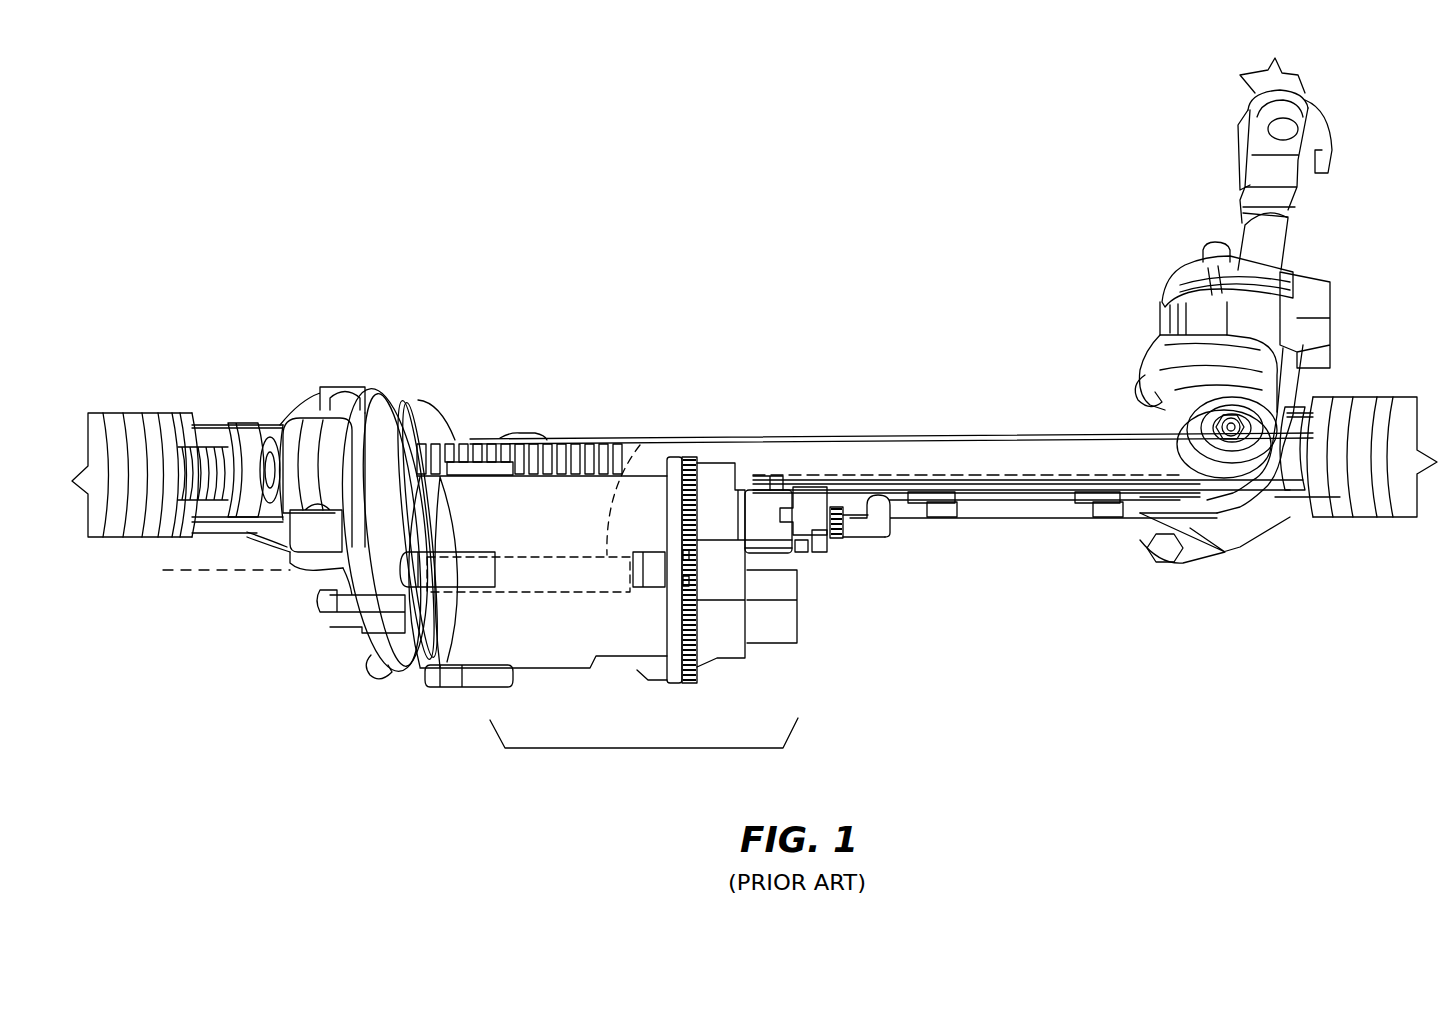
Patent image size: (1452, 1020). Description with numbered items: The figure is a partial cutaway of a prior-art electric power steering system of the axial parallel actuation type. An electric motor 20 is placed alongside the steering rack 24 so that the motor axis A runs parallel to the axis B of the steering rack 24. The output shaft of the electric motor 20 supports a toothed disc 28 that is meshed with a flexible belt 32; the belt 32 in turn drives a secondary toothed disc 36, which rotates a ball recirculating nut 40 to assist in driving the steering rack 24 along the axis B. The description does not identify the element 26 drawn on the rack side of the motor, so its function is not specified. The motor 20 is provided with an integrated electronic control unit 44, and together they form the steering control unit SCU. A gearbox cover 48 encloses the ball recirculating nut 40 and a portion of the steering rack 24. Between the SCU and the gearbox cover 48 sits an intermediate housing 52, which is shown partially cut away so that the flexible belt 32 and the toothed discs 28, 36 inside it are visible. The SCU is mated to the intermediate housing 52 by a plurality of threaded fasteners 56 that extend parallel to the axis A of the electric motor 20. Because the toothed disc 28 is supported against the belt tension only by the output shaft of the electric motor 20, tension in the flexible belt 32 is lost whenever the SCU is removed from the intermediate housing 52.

The electric motor 20 is at (560, 640).
The steering rack 24 is at (567, 450).
The gear ring 26 is at (641, 443).
The toothed disc 28 is at (340, 563).
The flexible belt 32 is at (370, 557).
The secondary toothed disc 36 is at (430, 400).
The ball recirculating nut 40 is at (328, 440).
The integrated electronic control unit 44 is at (727, 632).
The gearbox cover 48 is at (307, 416).
The intermediate housing 52 is at (452, 420).
The threaded fasteners 56 is at (397, 670).
The axis of the electric motor A is at (220, 575).
The axis of the steering rack B is at (973, 473).
The steering control unit SCU is at (644, 752).